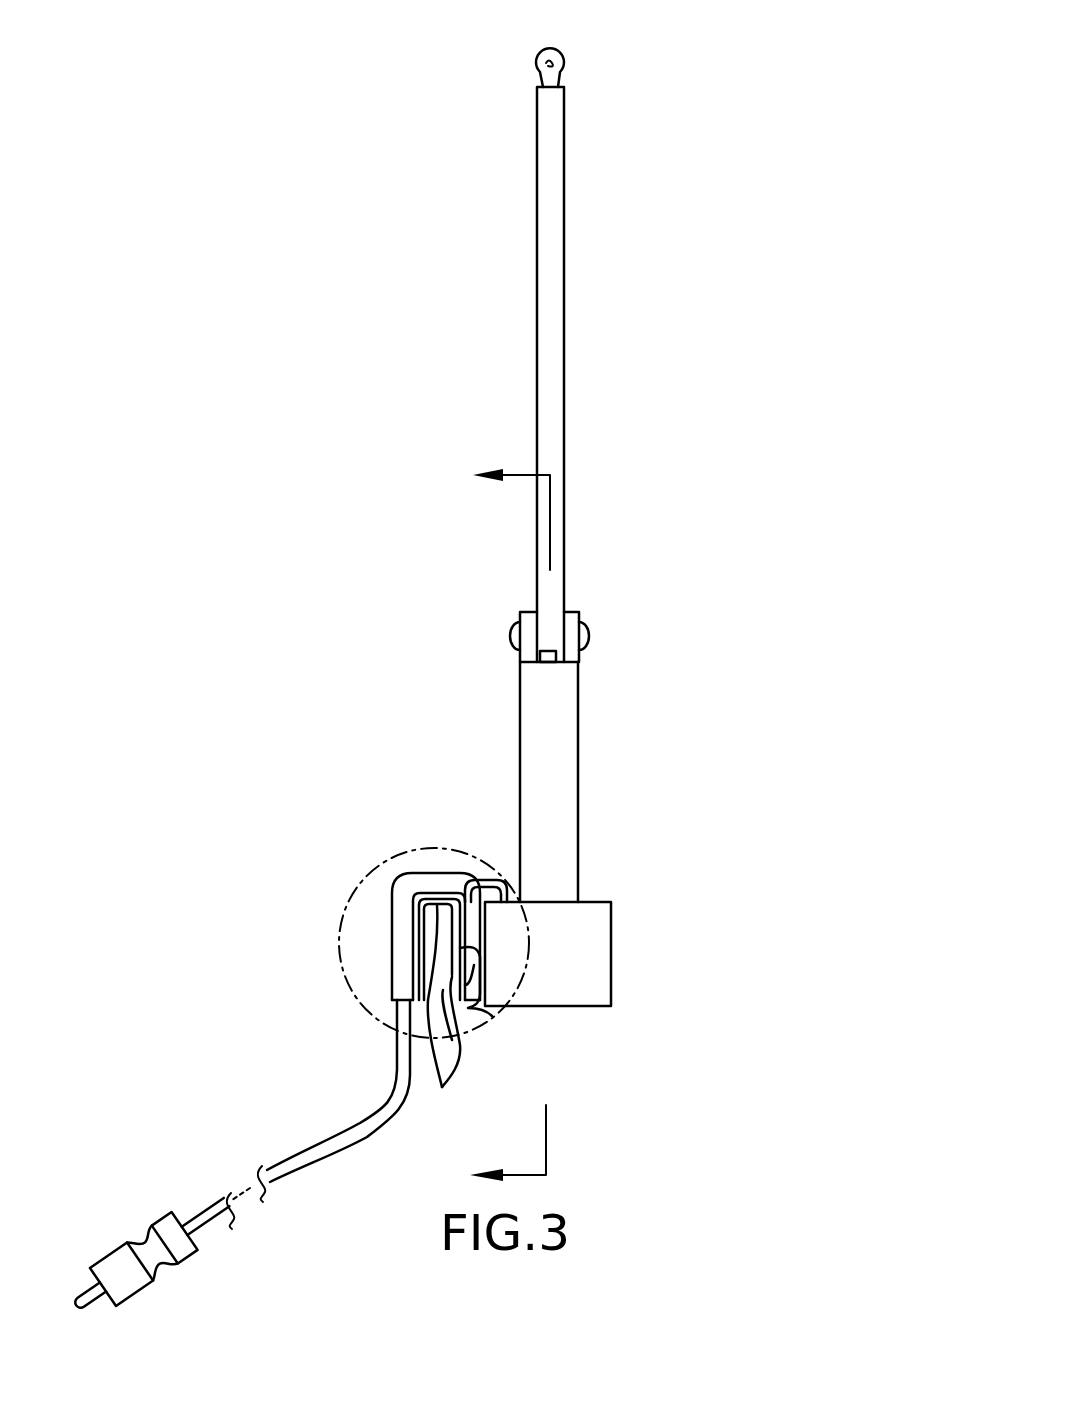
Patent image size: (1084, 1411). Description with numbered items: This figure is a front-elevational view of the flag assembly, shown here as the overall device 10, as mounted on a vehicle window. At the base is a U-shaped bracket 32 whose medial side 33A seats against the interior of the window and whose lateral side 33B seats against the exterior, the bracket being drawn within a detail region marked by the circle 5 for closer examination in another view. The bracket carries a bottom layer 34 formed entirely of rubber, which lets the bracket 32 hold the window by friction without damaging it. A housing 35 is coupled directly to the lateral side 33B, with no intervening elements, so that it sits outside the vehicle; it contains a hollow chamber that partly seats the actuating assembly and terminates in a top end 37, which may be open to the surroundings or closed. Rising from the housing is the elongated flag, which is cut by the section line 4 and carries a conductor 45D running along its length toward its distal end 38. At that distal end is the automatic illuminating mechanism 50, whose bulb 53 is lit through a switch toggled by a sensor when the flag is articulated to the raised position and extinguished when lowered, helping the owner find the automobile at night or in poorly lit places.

The device assembly 10 is at (243, 173).
The automatic illuminating mechanism 50 is at (566, 58).
The bulb 53 is at (545, 62).
The distal end of the flag 38 is at (545, 113).
The conductor 45D is at (548, 400).
The section line of FIG. 4 is at (492, 821).
The open top end 37 is at (548, 660).
The housing 35 is at (590, 950).
The detail circle of FIG. 5 is at (385, 862).
The U-shaped bracket 32 is at (424, 873).
The medial side 33A is at (392, 942).
The lateral side 33B is at (477, 1007).
The bottom layer 34 is at (442, 1015).